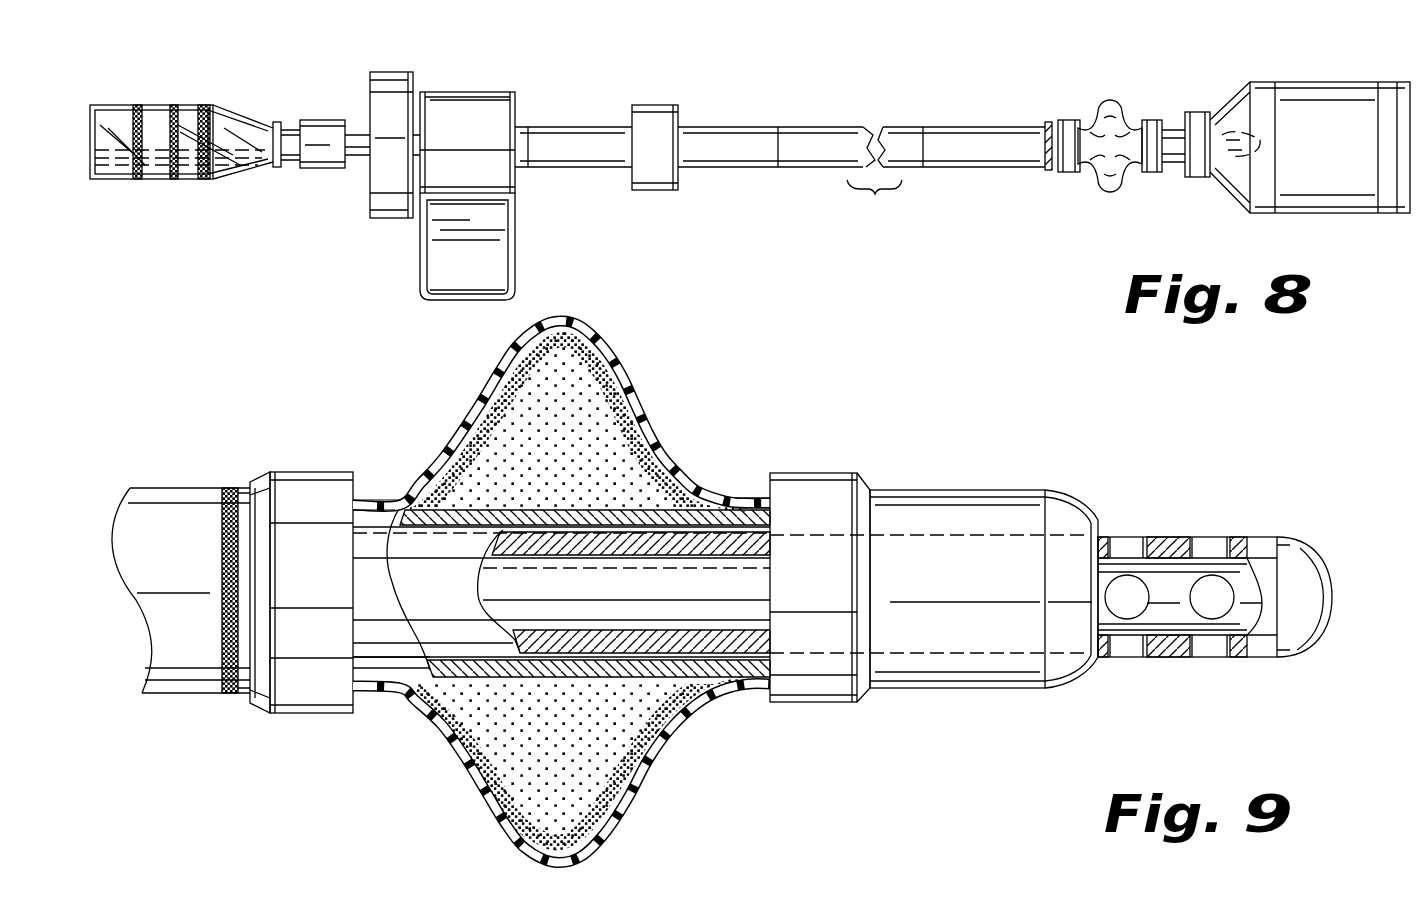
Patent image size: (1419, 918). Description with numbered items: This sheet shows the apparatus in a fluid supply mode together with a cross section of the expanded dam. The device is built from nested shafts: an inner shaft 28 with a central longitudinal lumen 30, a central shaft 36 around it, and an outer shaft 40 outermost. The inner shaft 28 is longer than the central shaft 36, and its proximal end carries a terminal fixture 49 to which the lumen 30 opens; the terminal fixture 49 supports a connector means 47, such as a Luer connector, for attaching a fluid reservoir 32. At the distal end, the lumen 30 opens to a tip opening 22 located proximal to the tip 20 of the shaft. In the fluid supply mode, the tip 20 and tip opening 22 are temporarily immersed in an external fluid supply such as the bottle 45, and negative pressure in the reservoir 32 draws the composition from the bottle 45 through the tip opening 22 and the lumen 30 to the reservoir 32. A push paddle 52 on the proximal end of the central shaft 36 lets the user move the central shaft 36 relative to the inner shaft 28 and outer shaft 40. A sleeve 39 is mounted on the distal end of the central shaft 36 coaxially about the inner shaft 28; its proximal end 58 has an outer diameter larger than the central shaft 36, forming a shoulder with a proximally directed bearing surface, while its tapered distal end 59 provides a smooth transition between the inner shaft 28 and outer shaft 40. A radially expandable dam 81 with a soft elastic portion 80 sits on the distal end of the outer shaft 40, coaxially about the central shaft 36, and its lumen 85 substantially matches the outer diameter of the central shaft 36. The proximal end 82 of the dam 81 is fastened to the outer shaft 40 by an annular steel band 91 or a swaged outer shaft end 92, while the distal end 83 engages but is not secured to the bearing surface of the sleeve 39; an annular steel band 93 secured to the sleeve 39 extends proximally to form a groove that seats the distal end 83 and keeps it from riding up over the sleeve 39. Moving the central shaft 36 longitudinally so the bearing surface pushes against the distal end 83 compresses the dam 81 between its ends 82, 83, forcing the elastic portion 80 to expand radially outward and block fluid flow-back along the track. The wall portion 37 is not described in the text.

In FIG. 9, the tip 20 is at (1318, 572).
In FIG. 9, the tip opening 22 is at (1130, 545).
In FIG. 8, the inner shaft 28 is at (353, 152).
In FIG. 9, the lumen 30 is at (740, 592).
In FIG. 8, the fluid reservoir 32 is at (120, 106).
In FIG. 9, the central shaft 36 is at (374, 630).
In FIG. 9, the outer tube wall 37 is at (748, 655).
In FIG. 9, the sleeve 39 is at (963, 682).
In FIG. 8, the outer shaft 40 is at (738, 169).
In FIG. 9, the outer shaft 40 is at (168, 707).
In FIG. 8, the bottle 45 is at (1308, 100).
In FIG. 8, the connector means 47 is at (276, 124).
In FIG. 8, the terminal fixture 49 is at (303, 94).
In FIG. 8, the push paddle 52 is at (435, 270).
In FIG. 9, the proximal end of the sleeve 58 is at (888, 502).
In FIG. 9, the distal end of the sleeve 59 is at (1077, 508).
In FIG. 9, the elastic portion 80 is at (618, 332).
In FIG. 8, the radially expandable dam 81 is at (1092, 180).
In FIG. 9, the radially expandable dam 81 is at (505, 832).
In FIG. 9, the proximal end of the dam 82 is at (388, 500).
In FIG. 9, the distal end of the dam 83 is at (732, 498).
In FIG. 9, the lumen 85 is at (612, 413).
In FIG. 9, the annular steel band 91 is at (296, 480).
In FIG. 9, the swaged outer shaft end 92 is at (175, 496).
In FIG. 9, the annular steel band 93 is at (822, 500).